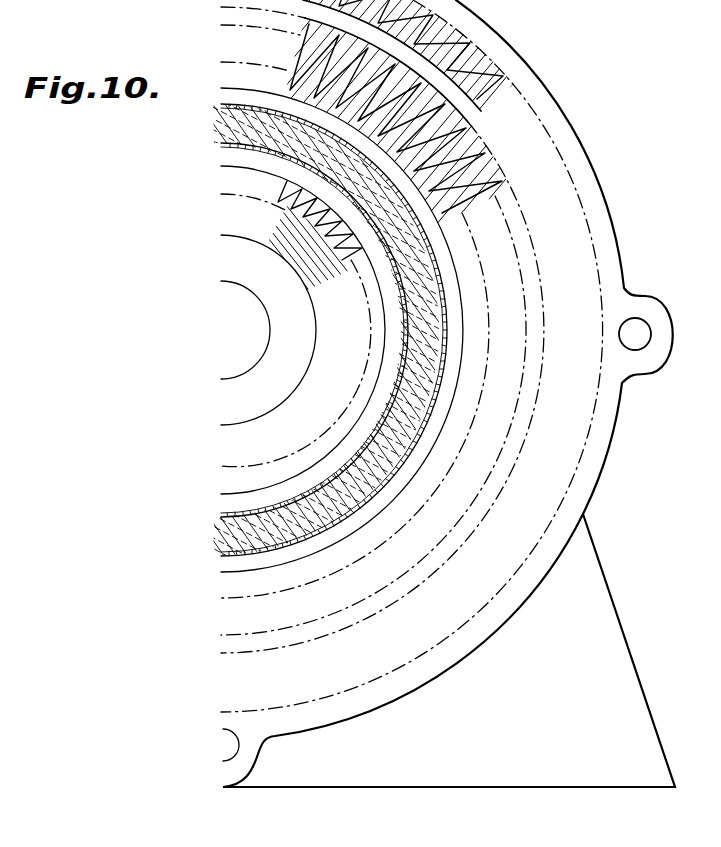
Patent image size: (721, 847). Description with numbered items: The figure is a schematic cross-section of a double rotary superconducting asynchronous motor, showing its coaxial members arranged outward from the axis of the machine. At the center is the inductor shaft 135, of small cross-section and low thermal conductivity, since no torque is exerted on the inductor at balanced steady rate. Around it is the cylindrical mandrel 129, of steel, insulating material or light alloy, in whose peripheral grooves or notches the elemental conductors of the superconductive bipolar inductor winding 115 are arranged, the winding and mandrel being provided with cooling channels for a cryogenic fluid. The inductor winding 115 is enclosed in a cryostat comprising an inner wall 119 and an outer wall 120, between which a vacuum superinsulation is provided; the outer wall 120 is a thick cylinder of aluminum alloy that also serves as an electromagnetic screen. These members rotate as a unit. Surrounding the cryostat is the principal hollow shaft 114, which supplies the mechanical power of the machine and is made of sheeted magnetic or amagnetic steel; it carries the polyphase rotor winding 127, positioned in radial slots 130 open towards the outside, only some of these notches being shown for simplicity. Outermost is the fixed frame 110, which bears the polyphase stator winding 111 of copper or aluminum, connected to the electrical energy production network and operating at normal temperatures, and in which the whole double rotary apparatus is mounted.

The fixed frame 110 is at (535, 78).
The stator winding 111 is at (452, 87).
The hollow shaft 114 is at (243, 47).
The inductor winding 115 is at (296, 202).
The inner wall 119 is at (245, 143).
The outer wall 120 is at (245, 102).
The polyphase rotor winding 127 is at (480, 190).
The cylindrical mandrel 129 is at (240, 443).
The radial slots 130 is at (338, 60).
The inductor shaft 135 is at (244, 320).